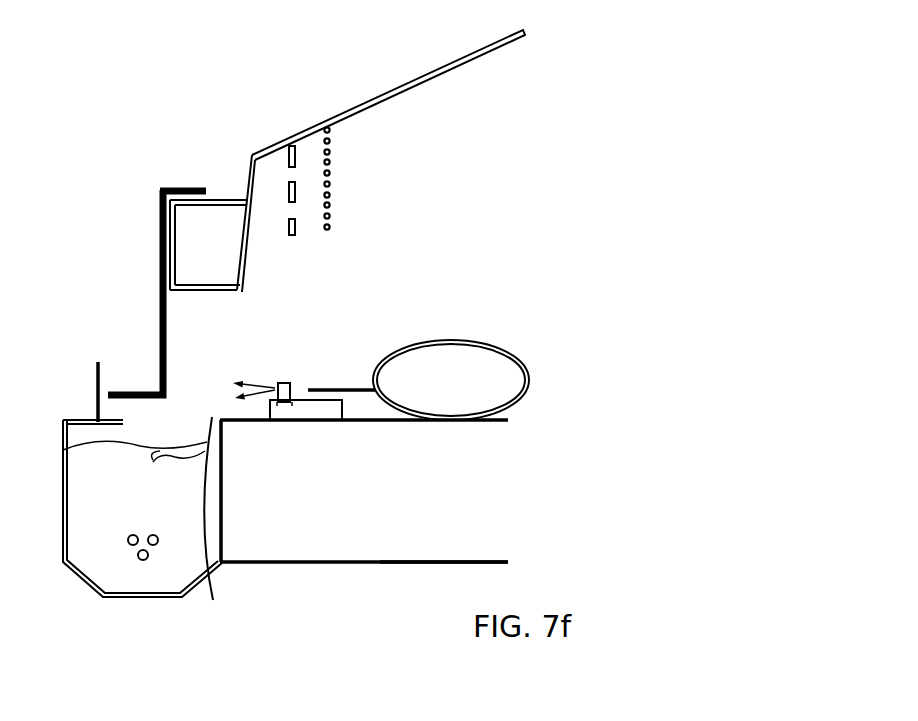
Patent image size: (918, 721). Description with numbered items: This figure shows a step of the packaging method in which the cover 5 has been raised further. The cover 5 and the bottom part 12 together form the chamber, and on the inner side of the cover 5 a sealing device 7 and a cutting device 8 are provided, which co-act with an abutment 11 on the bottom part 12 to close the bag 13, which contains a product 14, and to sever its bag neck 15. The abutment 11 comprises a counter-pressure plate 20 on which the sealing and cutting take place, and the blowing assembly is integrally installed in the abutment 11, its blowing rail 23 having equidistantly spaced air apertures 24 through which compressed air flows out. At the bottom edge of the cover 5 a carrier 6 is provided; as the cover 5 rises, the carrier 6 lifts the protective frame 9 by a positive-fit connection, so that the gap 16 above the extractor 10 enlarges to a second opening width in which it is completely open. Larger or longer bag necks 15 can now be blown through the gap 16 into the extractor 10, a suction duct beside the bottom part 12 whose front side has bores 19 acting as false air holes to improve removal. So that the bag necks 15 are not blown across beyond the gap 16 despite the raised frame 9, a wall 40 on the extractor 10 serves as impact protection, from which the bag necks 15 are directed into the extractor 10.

The cover 5 is at (420, 78).
The carrier 6 is at (190, 242).
The sealing device 7 is at (325, 146).
The cutting device 8 is at (289, 161).
The protective frame 9 is at (158, 305).
The extractor 10 is at (93, 568).
The abutment 11 is at (299, 470).
The bottom part 12 is at (400, 548).
The bag 13 is at (483, 345).
The product 14 is at (512, 375).
The bag neck 15 is at (68, 449).
The gap 16 is at (213, 600).
The bores 19 is at (152, 551).
The counter-pressure plate 20 is at (338, 408).
The blowing rail 23 is at (283, 383).
The air apertures 24 is at (275, 388).
The wall 40 is at (97, 390).